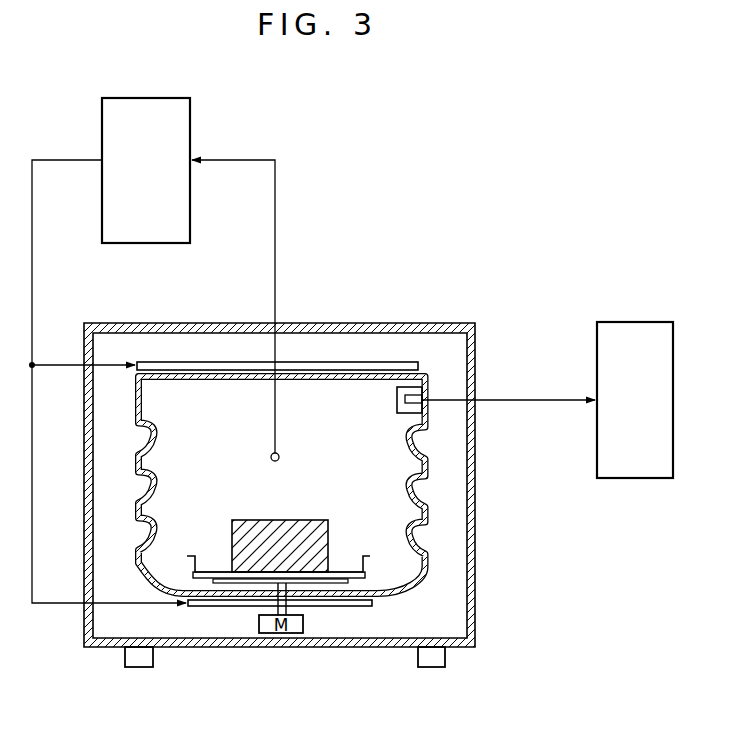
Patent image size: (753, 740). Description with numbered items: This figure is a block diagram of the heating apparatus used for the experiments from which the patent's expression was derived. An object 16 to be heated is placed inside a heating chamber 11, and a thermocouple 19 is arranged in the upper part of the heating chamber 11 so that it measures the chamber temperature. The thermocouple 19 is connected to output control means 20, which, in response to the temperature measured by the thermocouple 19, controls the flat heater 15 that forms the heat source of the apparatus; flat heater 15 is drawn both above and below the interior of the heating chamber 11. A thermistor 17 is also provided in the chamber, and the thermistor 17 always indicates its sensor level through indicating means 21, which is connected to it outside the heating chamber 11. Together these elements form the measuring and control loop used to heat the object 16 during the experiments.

The heating chamber 11 is at (170, 543).
The flat heater 15 is at (323, 362).
The object to be heated 16 is at (300, 522).
The thermistor 17 is at (413, 398).
The thermocouple 19 is at (280, 457).
The output control means 20 is at (190, 113).
The indicating means 21 is at (630, 322).